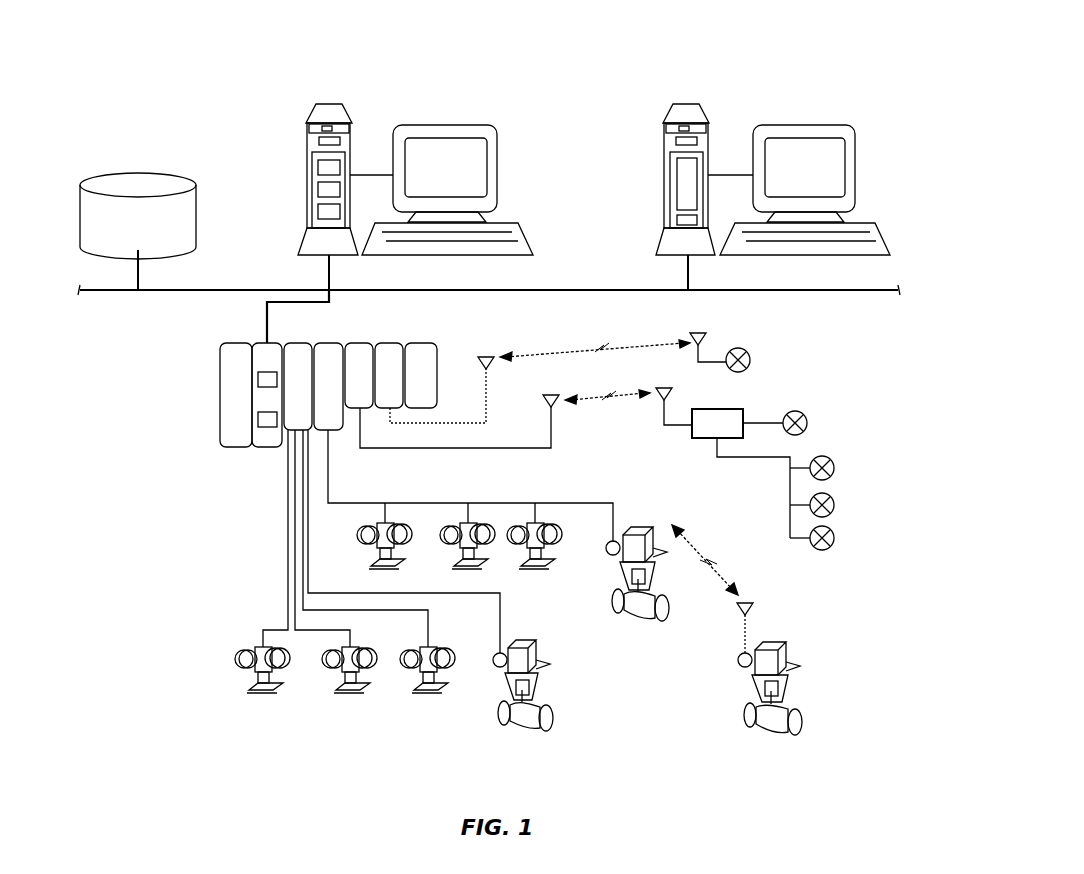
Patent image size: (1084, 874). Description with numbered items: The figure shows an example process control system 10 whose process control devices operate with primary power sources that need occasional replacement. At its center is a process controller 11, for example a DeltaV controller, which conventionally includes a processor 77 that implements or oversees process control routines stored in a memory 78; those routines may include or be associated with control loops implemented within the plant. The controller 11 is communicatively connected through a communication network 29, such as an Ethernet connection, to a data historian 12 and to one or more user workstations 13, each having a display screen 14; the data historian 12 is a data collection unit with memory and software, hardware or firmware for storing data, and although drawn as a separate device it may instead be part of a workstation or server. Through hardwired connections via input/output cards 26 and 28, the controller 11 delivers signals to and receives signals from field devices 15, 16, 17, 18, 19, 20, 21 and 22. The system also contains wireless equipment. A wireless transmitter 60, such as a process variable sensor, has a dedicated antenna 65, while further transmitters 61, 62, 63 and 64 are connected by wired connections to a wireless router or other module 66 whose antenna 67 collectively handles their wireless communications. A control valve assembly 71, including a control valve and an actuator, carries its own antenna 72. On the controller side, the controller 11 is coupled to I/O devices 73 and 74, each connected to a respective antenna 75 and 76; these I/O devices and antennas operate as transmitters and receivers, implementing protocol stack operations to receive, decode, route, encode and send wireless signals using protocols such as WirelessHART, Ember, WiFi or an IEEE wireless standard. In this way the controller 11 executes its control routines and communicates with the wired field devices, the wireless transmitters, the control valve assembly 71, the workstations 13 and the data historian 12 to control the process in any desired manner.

The process control system 10 is at (621, 72).
The process controller 11 is at (262, 352).
The data historian 12 is at (200, 215).
The user workstation 13 is at (306, 143).
The display screen 14 is at (498, 165).
The field device 15 is at (262, 693).
The field device 16 is at (349, 693).
The field device 17 is at (426, 693).
The field device 18 is at (509, 673).
The field device 19 is at (392, 523).
The field device 20 is at (474, 521).
The field device 21 is at (541, 521).
The field device 22 is at (636, 535).
The input/output card 26 is at (297, 360).
The input/output card 28 is at (325, 355).
The communication network 29 is at (197, 292).
The wireless field device (transmitter) 60 is at (751, 358).
The field device (transmitter) 61 is at (808, 421).
The field device (transmitter) 62 is at (835, 467).
The field device (transmitter) 63 is at (835, 503).
The field device (transmitter) 64 is at (835, 537).
The antenna 65 is at (708, 336).
The wireless router or other module 66 is at (703, 440).
The antenna 67 is at (676, 404).
The control valve assembly 71 is at (755, 670).
The antenna 72 is at (756, 609).
The I/O device 73 is at (360, 355).
The I/O device 74 is at (392, 355).
The antenna 75 is at (549, 428).
The antenna 76 is at (490, 378).
The processor 77 is at (257, 378).
The memory 78 is at (257, 418).